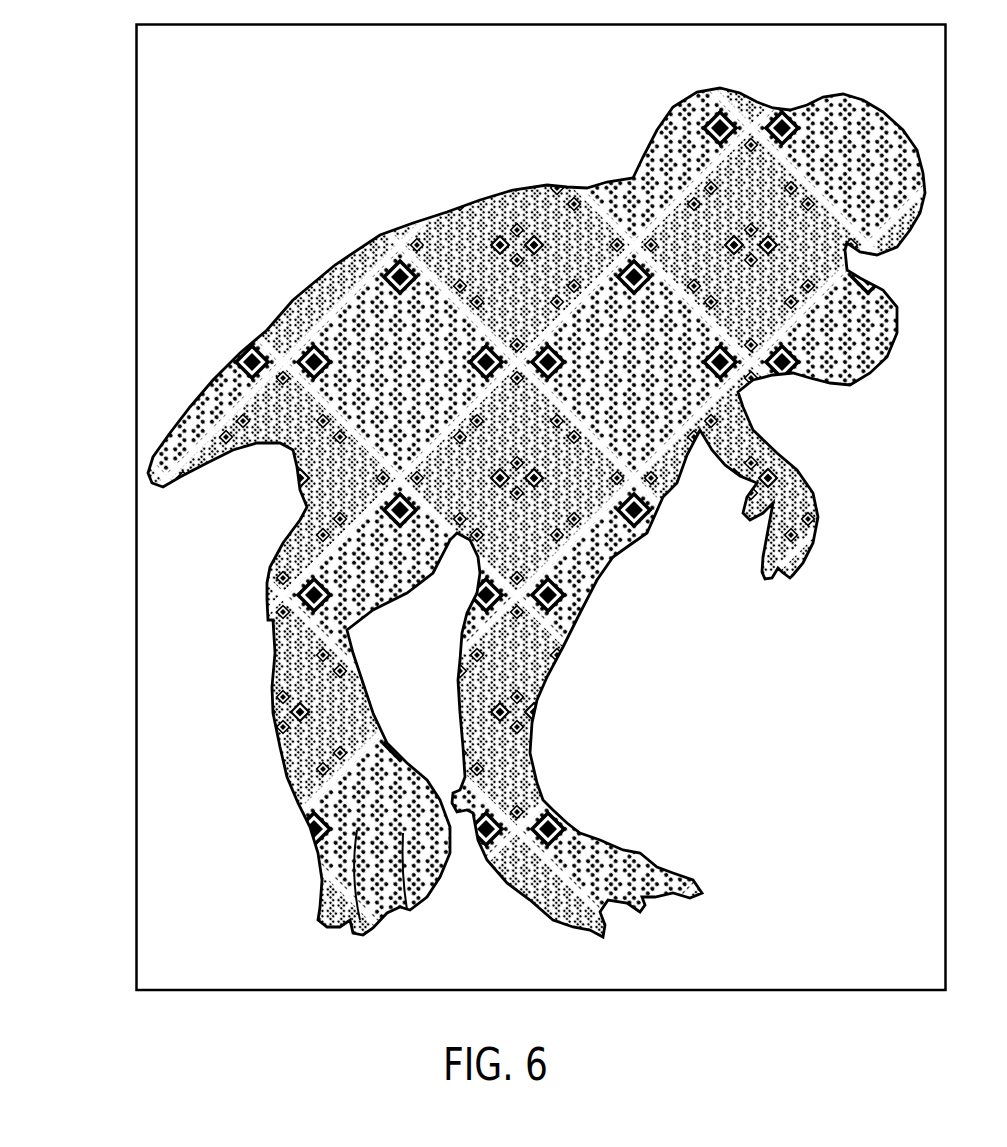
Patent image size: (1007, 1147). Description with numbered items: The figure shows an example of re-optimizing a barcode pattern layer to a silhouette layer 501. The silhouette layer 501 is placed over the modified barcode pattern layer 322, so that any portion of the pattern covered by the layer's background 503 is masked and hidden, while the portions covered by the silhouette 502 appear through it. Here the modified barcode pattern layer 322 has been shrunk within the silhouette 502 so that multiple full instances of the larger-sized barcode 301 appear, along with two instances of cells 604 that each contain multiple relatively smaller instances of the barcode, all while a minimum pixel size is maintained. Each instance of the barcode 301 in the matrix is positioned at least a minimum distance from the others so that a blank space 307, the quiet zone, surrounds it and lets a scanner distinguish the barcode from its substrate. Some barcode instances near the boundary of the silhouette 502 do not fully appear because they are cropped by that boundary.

The silhouette layer 501 is at (137, 68).
The background 503 is at (288, 150).
The silhouette 502 is at (503, 573).
The modified barcode pattern layer 322 is at (330, 333).
The barcode 301 is at (392, 388).
The blank space 307 is at (410, 440).
The cells 604 is at (483, 478).